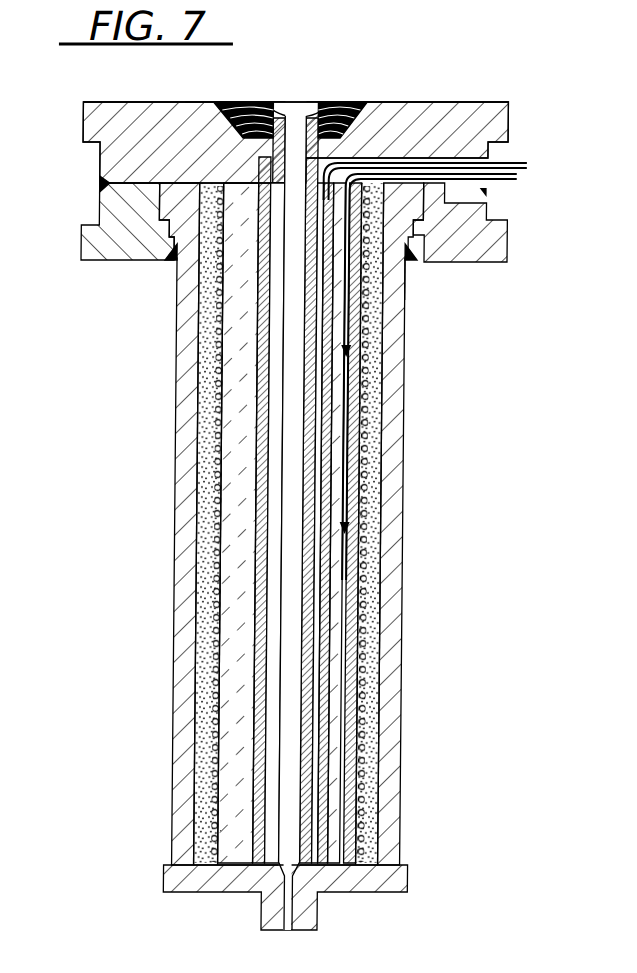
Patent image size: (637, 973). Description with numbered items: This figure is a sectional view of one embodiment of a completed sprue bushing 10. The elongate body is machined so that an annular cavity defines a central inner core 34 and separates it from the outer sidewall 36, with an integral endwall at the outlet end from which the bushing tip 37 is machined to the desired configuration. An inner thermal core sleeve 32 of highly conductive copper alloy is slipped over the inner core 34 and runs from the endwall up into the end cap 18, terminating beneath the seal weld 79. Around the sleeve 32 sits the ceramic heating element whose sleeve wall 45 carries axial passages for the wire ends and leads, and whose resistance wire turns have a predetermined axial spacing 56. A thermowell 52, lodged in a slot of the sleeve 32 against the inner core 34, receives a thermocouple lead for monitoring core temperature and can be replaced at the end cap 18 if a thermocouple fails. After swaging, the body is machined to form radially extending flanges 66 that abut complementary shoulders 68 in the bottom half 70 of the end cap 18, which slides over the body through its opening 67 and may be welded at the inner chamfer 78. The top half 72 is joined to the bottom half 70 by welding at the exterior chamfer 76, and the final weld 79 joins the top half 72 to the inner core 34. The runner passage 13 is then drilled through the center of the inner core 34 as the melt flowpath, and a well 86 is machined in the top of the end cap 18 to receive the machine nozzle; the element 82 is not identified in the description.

The sprue bushing 10 is at (90, 98).
The runner passage 13 is at (294, 126).
The end cap 18 is at (207, 98).
The inner thermal core sleeve 32 is at (268, 408).
The inner core member 34 is at (282, 468).
The outer sidewall 36 is at (184, 637).
The bushing tip 37 is at (276, 905).
The sleeve wall 45 is at (244, 348).
The thermowell 52 is at (326, 462).
The axial spacing 56 is at (370, 676).
The radially extending flanges 66 is at (174, 254).
The opening 67 is at (413, 254).
The shoulders 68 is at (160, 208).
The bottom half of end cap 70 is at (471, 252).
The top half of end cap 72 is at (96, 122).
The exterior chamfer 76 is at (102, 183).
The inner chamfer 78 is at (408, 262).
The seal weld 79 is at (346, 108).
The granular insulation 82 is at (206, 542).
The well 86 is at (272, 110).